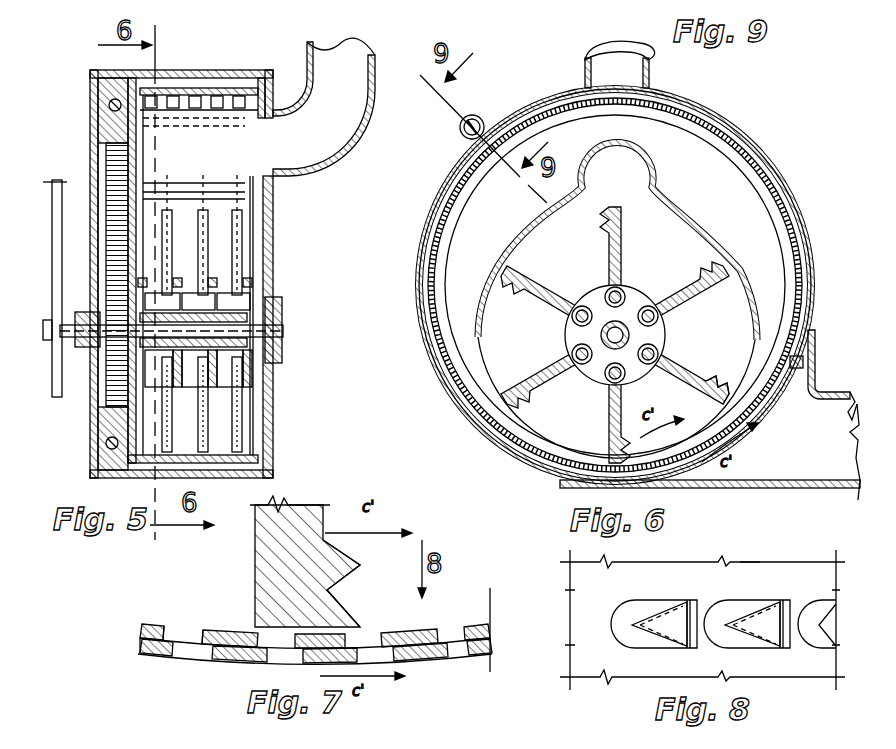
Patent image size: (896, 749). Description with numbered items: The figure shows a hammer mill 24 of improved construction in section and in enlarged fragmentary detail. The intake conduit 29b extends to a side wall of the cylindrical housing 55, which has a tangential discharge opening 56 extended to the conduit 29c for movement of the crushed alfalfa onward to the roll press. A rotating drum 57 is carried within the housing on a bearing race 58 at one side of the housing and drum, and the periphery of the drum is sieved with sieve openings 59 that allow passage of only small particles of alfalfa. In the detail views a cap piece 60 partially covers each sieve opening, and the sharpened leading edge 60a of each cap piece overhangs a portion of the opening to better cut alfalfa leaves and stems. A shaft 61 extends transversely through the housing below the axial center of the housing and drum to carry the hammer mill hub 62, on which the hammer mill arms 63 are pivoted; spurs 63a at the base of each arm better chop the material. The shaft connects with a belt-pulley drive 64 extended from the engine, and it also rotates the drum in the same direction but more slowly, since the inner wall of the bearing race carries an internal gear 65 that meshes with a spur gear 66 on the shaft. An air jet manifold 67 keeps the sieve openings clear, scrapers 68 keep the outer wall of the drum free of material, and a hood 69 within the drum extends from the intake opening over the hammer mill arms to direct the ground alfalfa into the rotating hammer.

In FIG. 5, the hammer mill 24 is at (80, 60).
In FIG. 6, the hammer mill 24 is at (710, 104).
In FIG. 5, the housing 55 is at (94, 91).
In FIG. 6, the housing 55 is at (750, 132).
In FIG. 5, the rotating drum 57 is at (213, 90).
In FIG. 6, the rotating drum 57 is at (773, 188).
In FIG. 7, the rotating drum 57 is at (145, 650).
In FIG. 8, the rotating drum 57 is at (756, 567).
In FIG. 9, the rotating drum 57 is at (838, 3).
In FIG. 5, the sieve openings 59 is at (170, 92).
In FIG. 6, the sieve openings 59 is at (458, 377).
In FIG. 7, the sieve openings 59 is at (200, 655).
In FIG. 8, the sieve openings 59 is at (622, 602).
In FIG. 5, the bearing race 58 is at (108, 109).
In FIG. 5, the internal gear 65 is at (112, 161).
In FIG. 5, the belt-pulley drive 64 is at (55, 212).
In FIG. 5, the spur gear 66 is at (112, 382).
In FIG. 5, the shaft 61 is at (283, 331).
In FIG. 6, the shaft 61 is at (605, 337).
In FIG. 5, the hammer mill hub 62 is at (233, 320).
In FIG. 6, the hammer mill hub 62 is at (598, 300).
In FIG. 5, the hammer mill arms 63 is at (207, 205).
In FIG. 6, the hammer mill arms 63 is at (624, 252).
In FIG. 7, the hammer mill arms 63 is at (310, 508).
In FIG. 6, the spurs 63a is at (751, 358).
In FIG. 7, the spurs 63a is at (352, 567).
In FIG. 5, the hood 69 is at (218, 158).
In FIG. 6, the hood 69 is at (690, 216).
In FIG. 5, the conduit 29b is at (330, 58).
In FIG. 6, the conduit 29b is at (596, 63).
In FIG. 6, the conduit 29c is at (838, 397).
In FIG. 6, the air jet manifold 67 is at (460, 130).
In FIG. 6, the scrapers 68 is at (794, 370).
In FIG. 6, the discharge opening 56 is at (735, 488).
In FIG. 7, the cap piece 60 is at (227, 622).
In FIG. 8, the cap piece 60 is at (688, 600).
In FIG. 9, the cap piece 60 is at (606, 3).
In FIG. 7, the leading edge 60a is at (202, 622).
In FIG. 8, the leading edge 60a is at (663, 650).